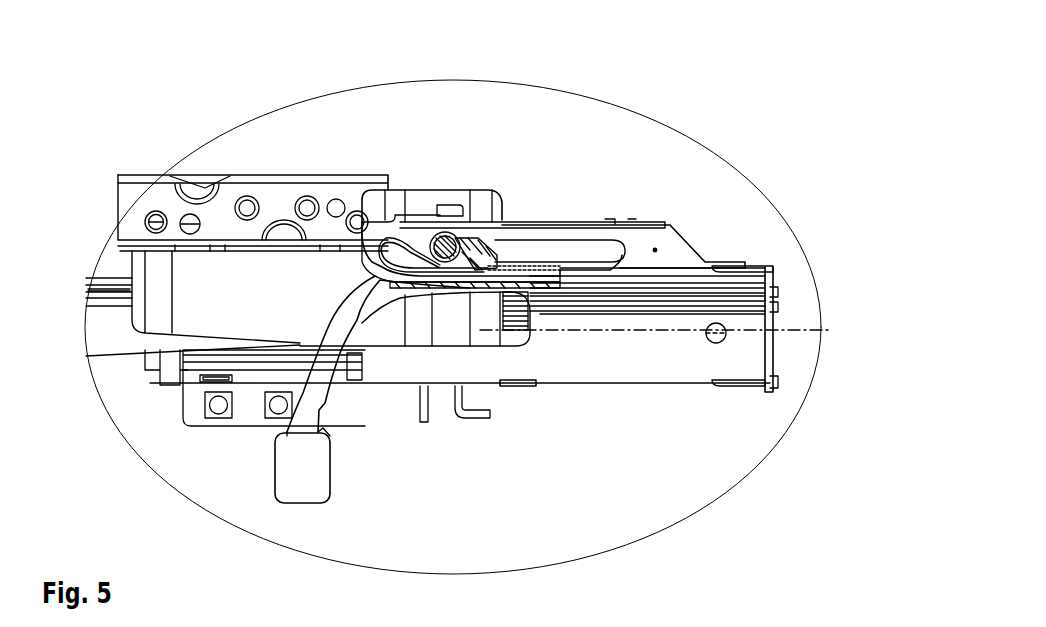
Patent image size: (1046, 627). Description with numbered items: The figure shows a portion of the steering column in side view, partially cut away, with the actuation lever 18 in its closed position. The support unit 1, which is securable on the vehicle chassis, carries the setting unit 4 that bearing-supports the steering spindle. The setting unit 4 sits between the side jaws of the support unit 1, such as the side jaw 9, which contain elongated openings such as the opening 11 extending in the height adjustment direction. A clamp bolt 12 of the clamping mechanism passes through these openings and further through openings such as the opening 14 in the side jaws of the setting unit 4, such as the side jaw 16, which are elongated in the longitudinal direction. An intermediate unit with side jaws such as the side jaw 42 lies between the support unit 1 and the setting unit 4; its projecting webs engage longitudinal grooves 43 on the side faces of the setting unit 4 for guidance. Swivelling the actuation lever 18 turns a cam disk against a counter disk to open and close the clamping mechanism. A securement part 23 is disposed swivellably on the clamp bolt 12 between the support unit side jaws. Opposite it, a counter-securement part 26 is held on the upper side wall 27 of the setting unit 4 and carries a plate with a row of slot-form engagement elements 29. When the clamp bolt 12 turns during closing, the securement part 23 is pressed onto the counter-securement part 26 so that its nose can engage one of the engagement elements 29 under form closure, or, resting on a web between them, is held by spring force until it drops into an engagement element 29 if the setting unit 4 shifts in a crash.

The support unit 1 is at (246, 167).
The setting unit 4 is at (631, 395).
The side jaw 9 is at (441, 346).
The opening 11 is at (450, 190).
The clamp bolt 12 is at (447, 243).
The opening 14 is at (605, 247).
The side jaw 16 is at (594, 346).
The actuation lever 18 is at (313, 397).
The securement part 23 is at (470, 262).
The counter-securement part 26 is at (560, 269).
The upper side wall 27 is at (765, 277).
The engagement elements 29 is at (588, 258).
The side jaw 42 is at (514, 332).
The longitudinal grooves 43 is at (690, 306).